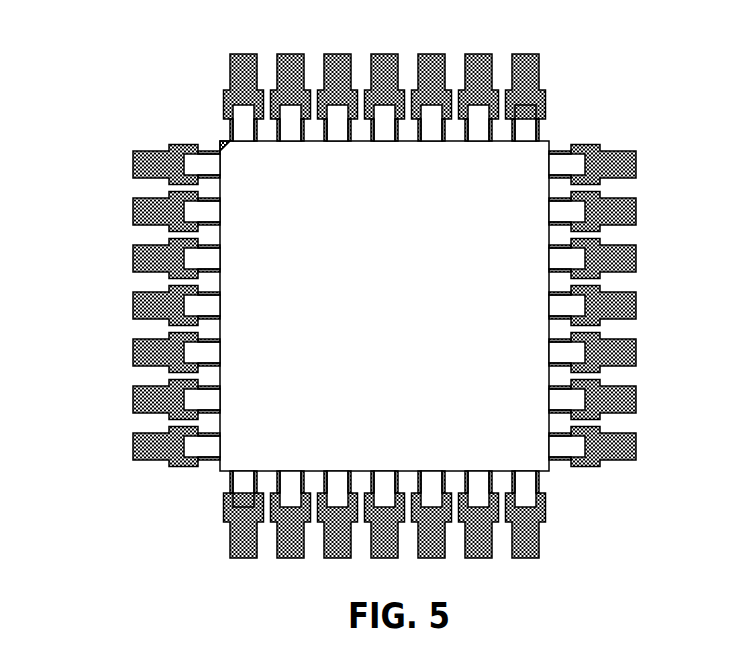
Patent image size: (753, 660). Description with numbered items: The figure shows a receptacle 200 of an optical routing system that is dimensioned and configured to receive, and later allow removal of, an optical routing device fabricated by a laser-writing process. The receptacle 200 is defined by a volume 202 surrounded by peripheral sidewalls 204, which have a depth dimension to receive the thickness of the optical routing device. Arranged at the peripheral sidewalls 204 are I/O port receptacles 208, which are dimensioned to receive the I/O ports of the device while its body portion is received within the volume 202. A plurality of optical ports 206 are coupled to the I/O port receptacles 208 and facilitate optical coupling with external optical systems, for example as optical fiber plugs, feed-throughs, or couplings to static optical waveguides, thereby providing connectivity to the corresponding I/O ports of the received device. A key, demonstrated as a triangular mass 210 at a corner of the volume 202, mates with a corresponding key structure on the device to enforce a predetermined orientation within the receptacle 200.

The receptacle 200 is at (118, 60).
The volume 202 is at (414, 314).
The peripheral sidewalls 204 is at (358, 143).
The optical ports 206 is at (560, 88).
The I/O port receptacles 208 is at (223, 123).
The triangular mass 210 is at (233, 153).